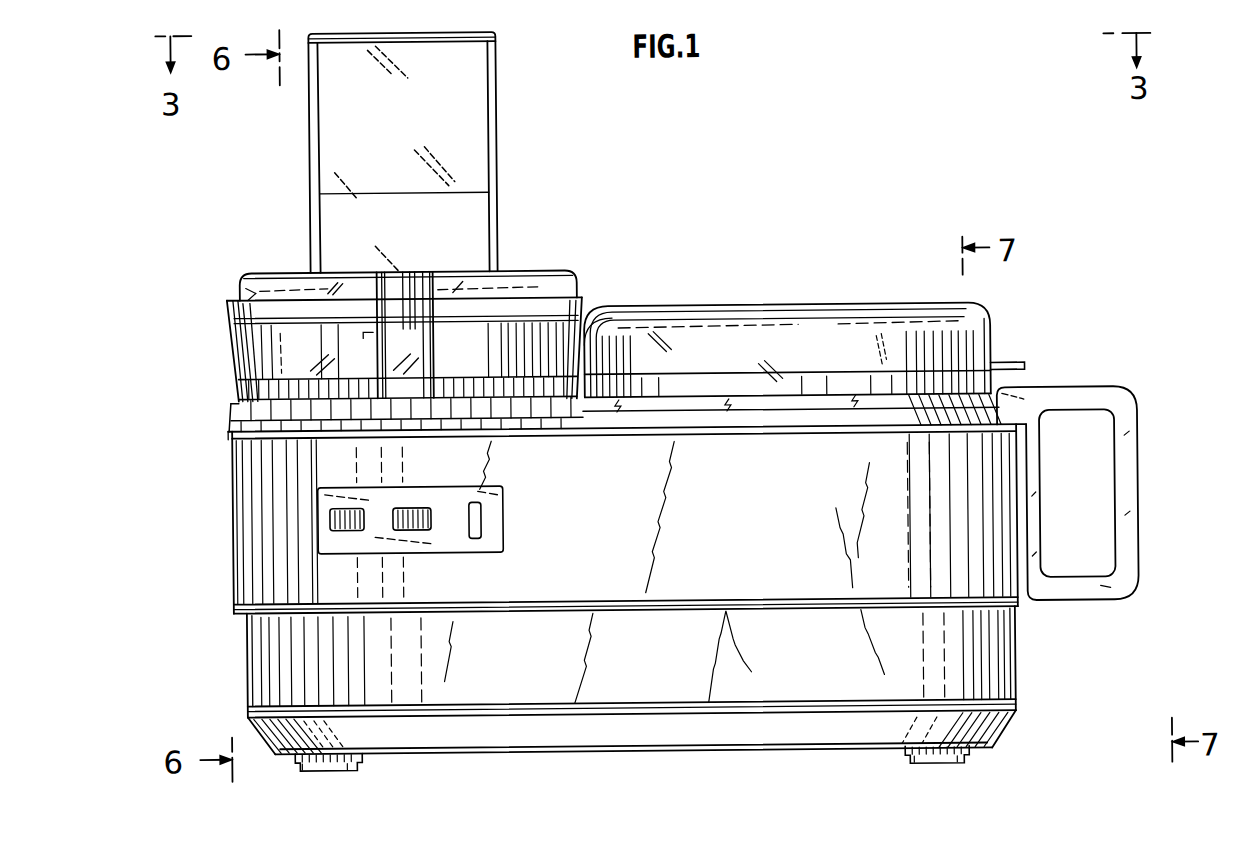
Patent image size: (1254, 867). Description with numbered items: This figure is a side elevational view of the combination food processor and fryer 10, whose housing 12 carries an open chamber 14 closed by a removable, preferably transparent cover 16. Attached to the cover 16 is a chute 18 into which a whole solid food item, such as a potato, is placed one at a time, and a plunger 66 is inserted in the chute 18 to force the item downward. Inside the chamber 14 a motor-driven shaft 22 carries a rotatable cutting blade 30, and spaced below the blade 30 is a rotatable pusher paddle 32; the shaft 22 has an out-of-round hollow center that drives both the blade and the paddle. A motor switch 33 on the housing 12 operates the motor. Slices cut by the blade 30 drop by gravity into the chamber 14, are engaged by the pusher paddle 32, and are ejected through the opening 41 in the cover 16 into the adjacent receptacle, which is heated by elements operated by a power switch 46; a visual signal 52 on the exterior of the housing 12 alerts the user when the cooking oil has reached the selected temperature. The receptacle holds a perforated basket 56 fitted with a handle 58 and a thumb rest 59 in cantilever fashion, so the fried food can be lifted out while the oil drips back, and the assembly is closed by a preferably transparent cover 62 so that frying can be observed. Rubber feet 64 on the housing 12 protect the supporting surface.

The combination food processor and fryer 10 is at (938, 118).
The housing 12 is at (232, 527).
The open chamber 14 is at (274, 335).
The cover 16 is at (573, 277).
The chute 18 is at (502, 213).
The shaft 22 is at (414, 288).
The rotatable cutting blade 30 is at (345, 367).
The rotatable pusher paddle 32 is at (495, 349).
The motor switch 33 is at (424, 527).
The opening 41 is at (599, 319).
The power switch 46 is at (363, 519).
The visual signal 52 is at (484, 528).
The perforated basket 56 is at (769, 376).
The handle 58 is at (1090, 391).
The thumb rest 59 is at (999, 362).
The cover 62 is at (820, 327).
The rubber feet 64 is at (350, 765).
The plunger 66 is at (498, 36).